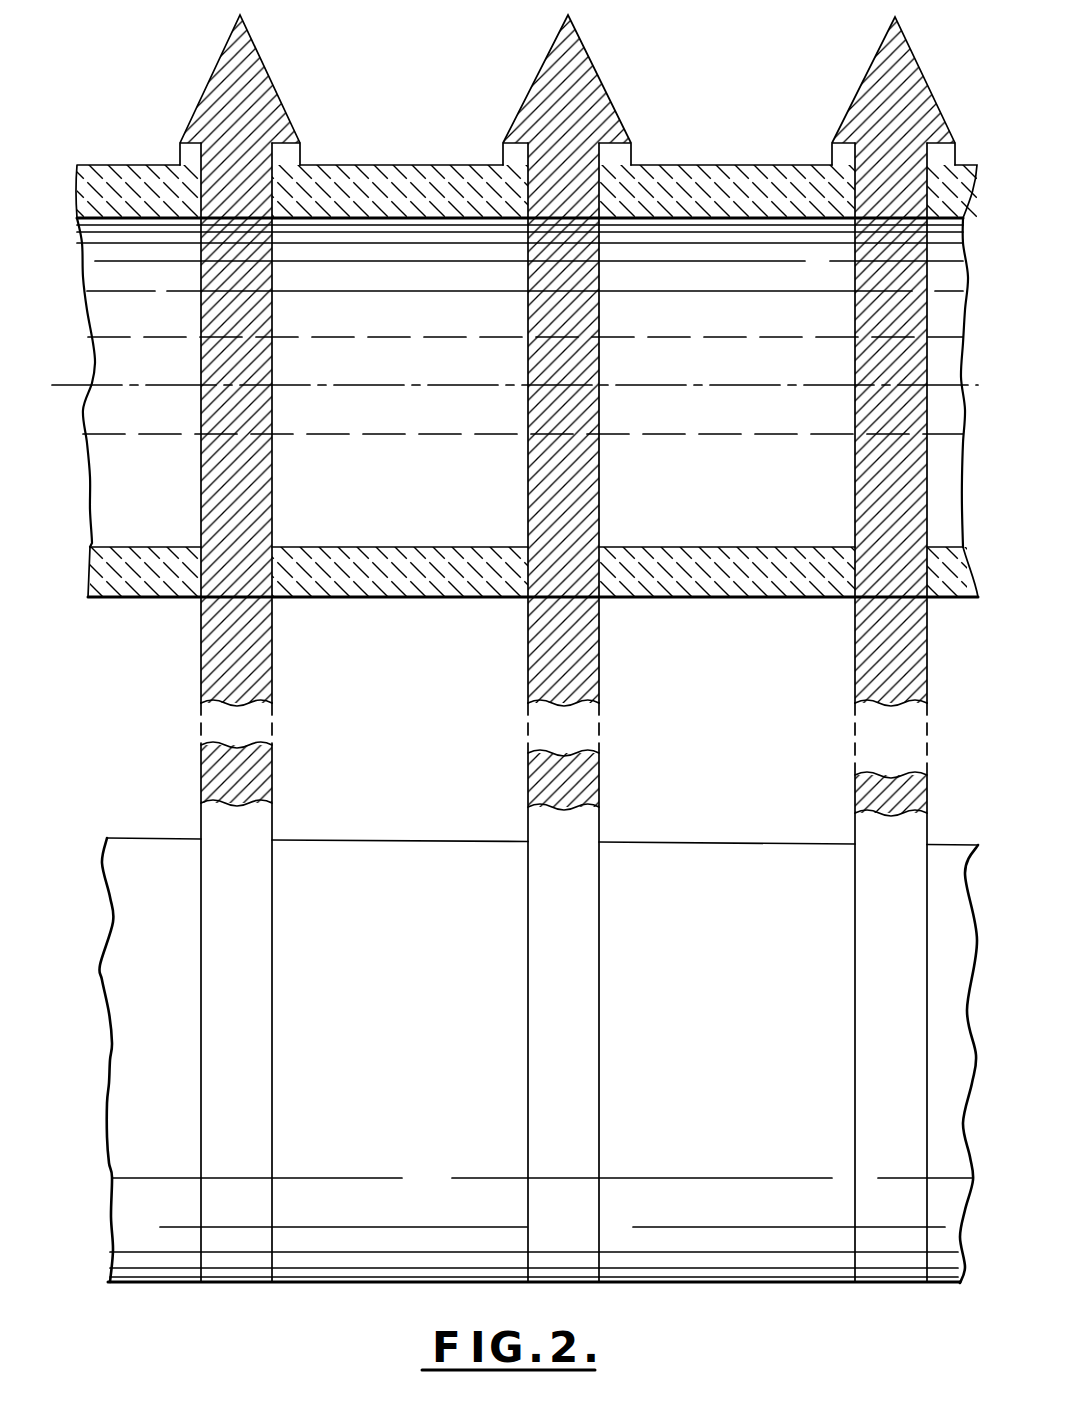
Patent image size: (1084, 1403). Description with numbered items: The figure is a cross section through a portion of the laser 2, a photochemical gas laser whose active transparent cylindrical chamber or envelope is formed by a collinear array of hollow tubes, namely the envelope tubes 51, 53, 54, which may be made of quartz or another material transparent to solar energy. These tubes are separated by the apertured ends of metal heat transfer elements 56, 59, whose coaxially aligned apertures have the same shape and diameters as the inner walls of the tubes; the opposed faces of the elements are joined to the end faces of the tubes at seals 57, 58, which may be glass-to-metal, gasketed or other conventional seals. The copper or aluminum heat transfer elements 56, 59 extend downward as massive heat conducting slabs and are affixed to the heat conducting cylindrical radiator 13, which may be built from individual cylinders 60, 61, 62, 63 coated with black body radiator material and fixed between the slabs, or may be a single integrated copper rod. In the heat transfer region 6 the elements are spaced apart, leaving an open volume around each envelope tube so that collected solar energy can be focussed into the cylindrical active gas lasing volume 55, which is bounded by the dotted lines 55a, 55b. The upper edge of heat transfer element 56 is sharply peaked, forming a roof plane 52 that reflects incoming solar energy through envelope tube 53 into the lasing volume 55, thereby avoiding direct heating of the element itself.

The laser 2 is at (398, 126).
The envelope tube 51 is at (138, 165).
The roof plane 52 is at (259, 61).
The envelope tube 53 is at (443, 165).
The envelope tube 54 is at (743, 165).
The cylindrical active gas lasing volume 55 is at (75, 351).
The dotted line 55a is at (352, 305).
The dotted line 55b is at (470, 435).
The heat transfer element 56 is at (272, 462).
The seal 57 is at (201, 562).
The seal 58 is at (273, 573).
The heat transfer element 59 is at (600, 488).
The heat transfer region 6 is at (193, 605).
The cylinder 60 is at (125, 917).
The cylinder 61 is at (417, 842).
The cylinder 62 is at (753, 848).
The cylinder 63 is at (948, 848).
The cylindrical radiator 13 is at (96, 1040).